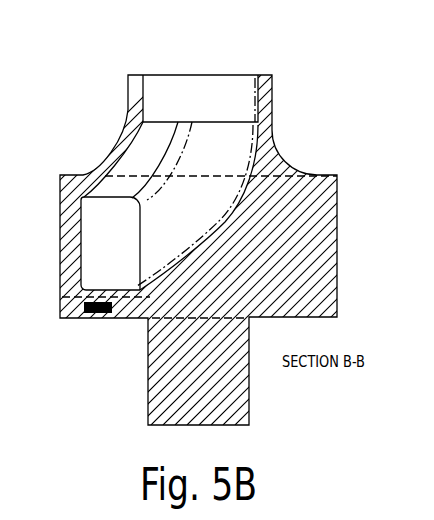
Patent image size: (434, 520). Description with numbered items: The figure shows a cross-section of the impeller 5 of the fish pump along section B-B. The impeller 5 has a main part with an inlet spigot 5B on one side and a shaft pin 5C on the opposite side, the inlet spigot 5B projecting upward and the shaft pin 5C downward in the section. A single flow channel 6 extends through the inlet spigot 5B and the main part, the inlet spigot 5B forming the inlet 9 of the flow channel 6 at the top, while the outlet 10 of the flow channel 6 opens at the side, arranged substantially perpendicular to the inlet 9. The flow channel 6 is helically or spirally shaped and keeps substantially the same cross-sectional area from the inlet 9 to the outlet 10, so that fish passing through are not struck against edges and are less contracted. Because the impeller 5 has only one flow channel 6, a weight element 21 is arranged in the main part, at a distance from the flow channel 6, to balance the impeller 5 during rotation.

The impeller 5 is at (93, 96).
The flow channel 6 is at (194, 212).
The inlet 9 is at (205, 56).
The outlet 10 is at (60, 249).
The weight element 21 is at (88, 318).
The inlet spigot 5B is at (299, 108).
The shaft pin 5C is at (198, 392).